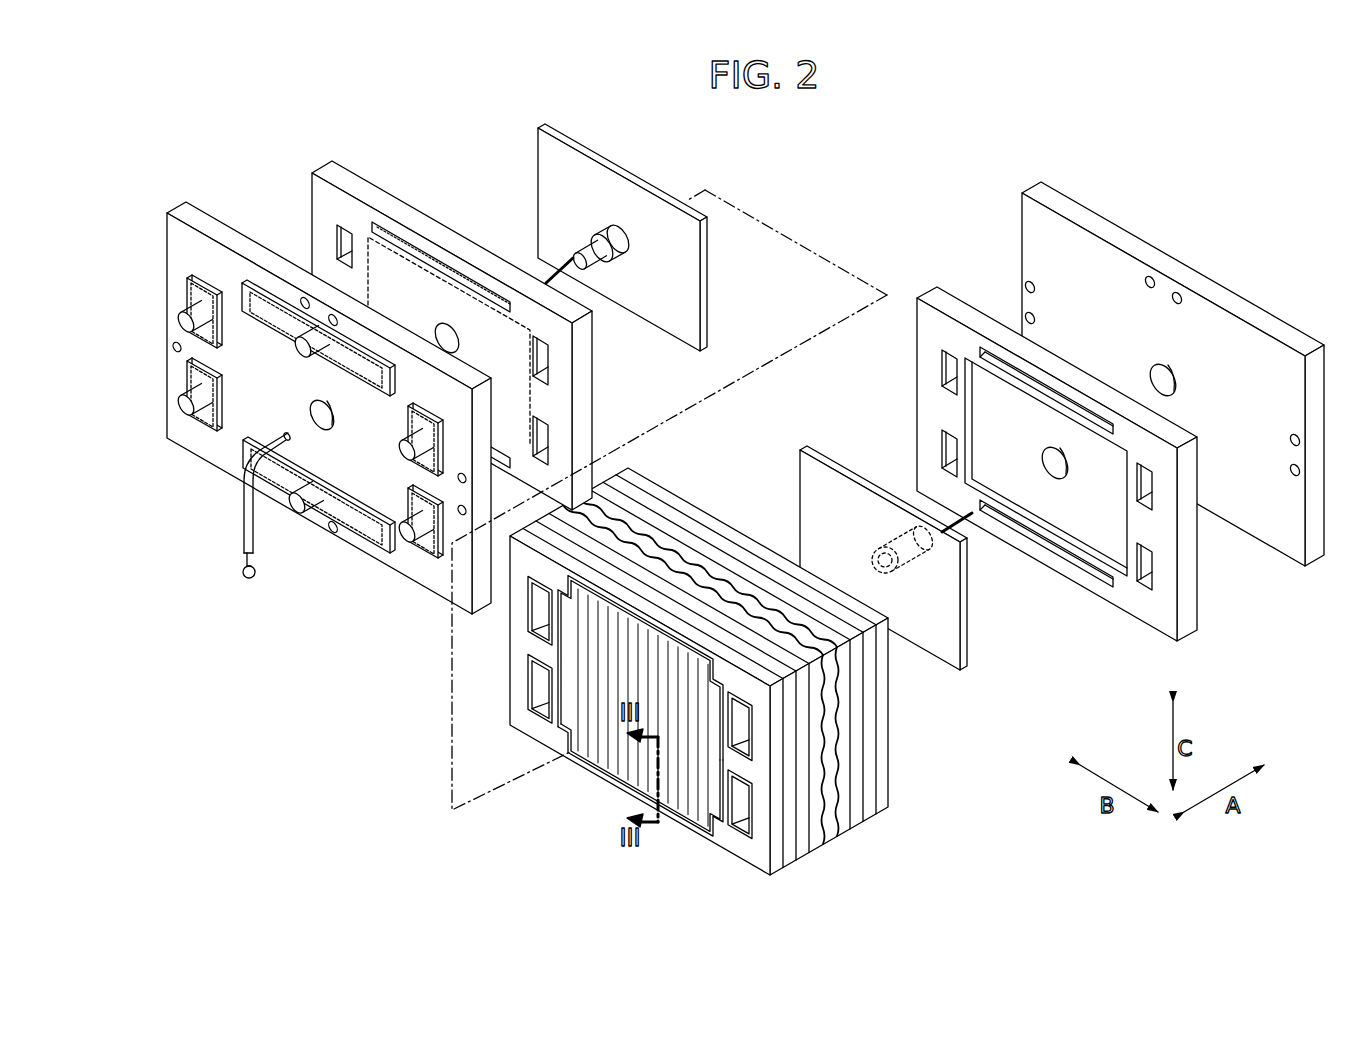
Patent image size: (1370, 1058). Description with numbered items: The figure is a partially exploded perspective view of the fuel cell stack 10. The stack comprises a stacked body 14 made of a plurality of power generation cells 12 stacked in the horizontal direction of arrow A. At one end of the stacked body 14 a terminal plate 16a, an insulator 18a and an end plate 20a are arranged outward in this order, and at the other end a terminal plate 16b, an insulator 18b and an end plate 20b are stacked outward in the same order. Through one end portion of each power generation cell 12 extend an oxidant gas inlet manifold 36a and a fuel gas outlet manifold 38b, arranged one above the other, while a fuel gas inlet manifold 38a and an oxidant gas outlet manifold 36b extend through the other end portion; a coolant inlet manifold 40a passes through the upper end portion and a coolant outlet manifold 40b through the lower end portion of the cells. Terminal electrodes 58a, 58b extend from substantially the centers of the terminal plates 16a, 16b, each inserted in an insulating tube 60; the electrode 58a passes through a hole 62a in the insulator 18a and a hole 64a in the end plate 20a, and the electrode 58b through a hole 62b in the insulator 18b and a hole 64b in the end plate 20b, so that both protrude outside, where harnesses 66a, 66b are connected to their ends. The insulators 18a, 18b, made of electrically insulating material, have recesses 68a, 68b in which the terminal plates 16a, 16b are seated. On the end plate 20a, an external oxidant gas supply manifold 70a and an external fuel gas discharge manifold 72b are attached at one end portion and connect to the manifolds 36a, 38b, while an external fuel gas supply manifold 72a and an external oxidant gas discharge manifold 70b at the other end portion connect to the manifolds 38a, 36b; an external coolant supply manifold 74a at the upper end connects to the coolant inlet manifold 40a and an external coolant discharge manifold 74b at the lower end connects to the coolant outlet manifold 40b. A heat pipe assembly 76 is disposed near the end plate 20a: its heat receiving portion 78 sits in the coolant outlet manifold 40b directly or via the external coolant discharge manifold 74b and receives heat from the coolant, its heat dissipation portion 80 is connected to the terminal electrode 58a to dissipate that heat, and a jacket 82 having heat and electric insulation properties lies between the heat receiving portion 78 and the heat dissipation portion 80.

The fuel cell stack 10 is at (797, 131).
The power generation cell 12 is at (873, 821).
The stacked body 14 is at (943, 805).
The terminal plate 16a is at (536, 140).
The terminal plate 16b is at (797, 463).
The insulator 18a is at (309, 191).
The insulator 18b is at (944, 292).
The end plate 20a is at (206, 206).
The end plate 20b is at (1084, 203).
The oxidant gas inlet manifold 36a is at (538, 609).
The oxidant gas outlet manifold 36b is at (740, 827).
The fuel gas inlet manifold 38a is at (728, 739).
The fuel gas outlet manifold 38b is at (539, 687).
The coolant inlet manifold 40a is at (643, 627).
The coolant outlet manifold 40b is at (623, 771).
The terminal electrode 58a is at (582, 241).
The terminal electrode 58b is at (928, 562).
The insulating tube 60 is at (617, 250).
The hole 62a is at (456, 341).
The hole 62b is at (1046, 469).
The hole 64a is at (326, 431).
The hole 64b is at (1182, 387).
The harness 66a is at (561, 272).
The harness 66b is at (955, 527).
The recess 68a is at (540, 400).
The recess 68b is at (1083, 561).
The external oxidant gas supply manifold 70a is at (186, 312).
The external oxidant gas discharge manifold 70b is at (401, 543).
The external fuel gas supply manifold 72a is at (410, 446).
The external fuel gas discharge manifold 72b is at (186, 412).
The external coolant supply manifold 74a is at (298, 350).
The external coolant discharge manifold 74b is at (300, 513).
The heat pipe assembly 76 is at (240, 505).
The heat receiving portion 78 is at (251, 580).
The heat dissipation portion 80 is at (284, 432).
The jacket 82 is at (243, 509).